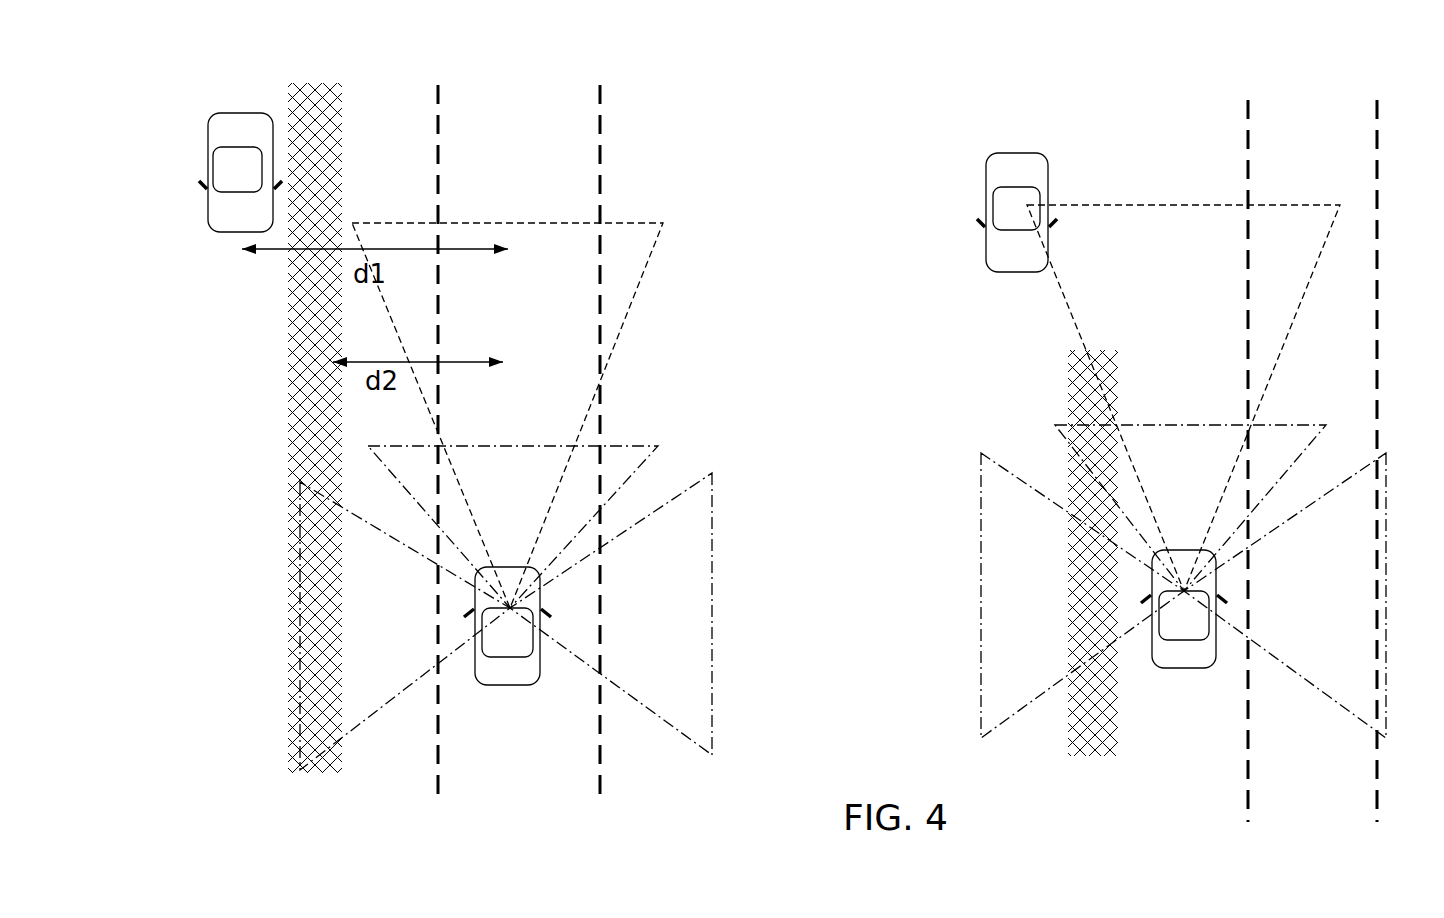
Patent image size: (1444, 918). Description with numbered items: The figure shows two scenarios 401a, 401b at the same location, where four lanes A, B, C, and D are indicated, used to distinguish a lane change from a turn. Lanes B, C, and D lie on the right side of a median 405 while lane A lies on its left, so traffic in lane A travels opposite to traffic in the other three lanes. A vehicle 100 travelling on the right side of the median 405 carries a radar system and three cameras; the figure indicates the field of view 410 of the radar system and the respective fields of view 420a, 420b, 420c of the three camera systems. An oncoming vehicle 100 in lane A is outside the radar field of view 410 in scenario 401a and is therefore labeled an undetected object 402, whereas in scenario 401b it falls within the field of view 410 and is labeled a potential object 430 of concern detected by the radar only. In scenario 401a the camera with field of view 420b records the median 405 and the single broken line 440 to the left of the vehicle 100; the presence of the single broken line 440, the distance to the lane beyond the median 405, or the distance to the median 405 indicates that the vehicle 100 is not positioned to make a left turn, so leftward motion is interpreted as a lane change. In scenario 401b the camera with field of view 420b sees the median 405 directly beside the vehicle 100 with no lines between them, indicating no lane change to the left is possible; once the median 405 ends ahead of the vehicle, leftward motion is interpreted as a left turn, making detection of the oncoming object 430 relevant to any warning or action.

The vehicle 100 is at (502, 685).
The undetected object 402 is at (208, 219).
The potential object of concern 430 is at (980, 224).
The median 405 is at (333, 84).
The field of view of the radar system 410 is at (1053, 288).
The field of view of the camera system 420a is at (1055, 425).
The field of view of the camera system 420b is at (388, 693).
The field of view of the camera system 420c is at (713, 577).
The single broken line 440 is at (441, 128).
The scenario 401a is at (668, 118).
The scenario 401b is at (887, 100).